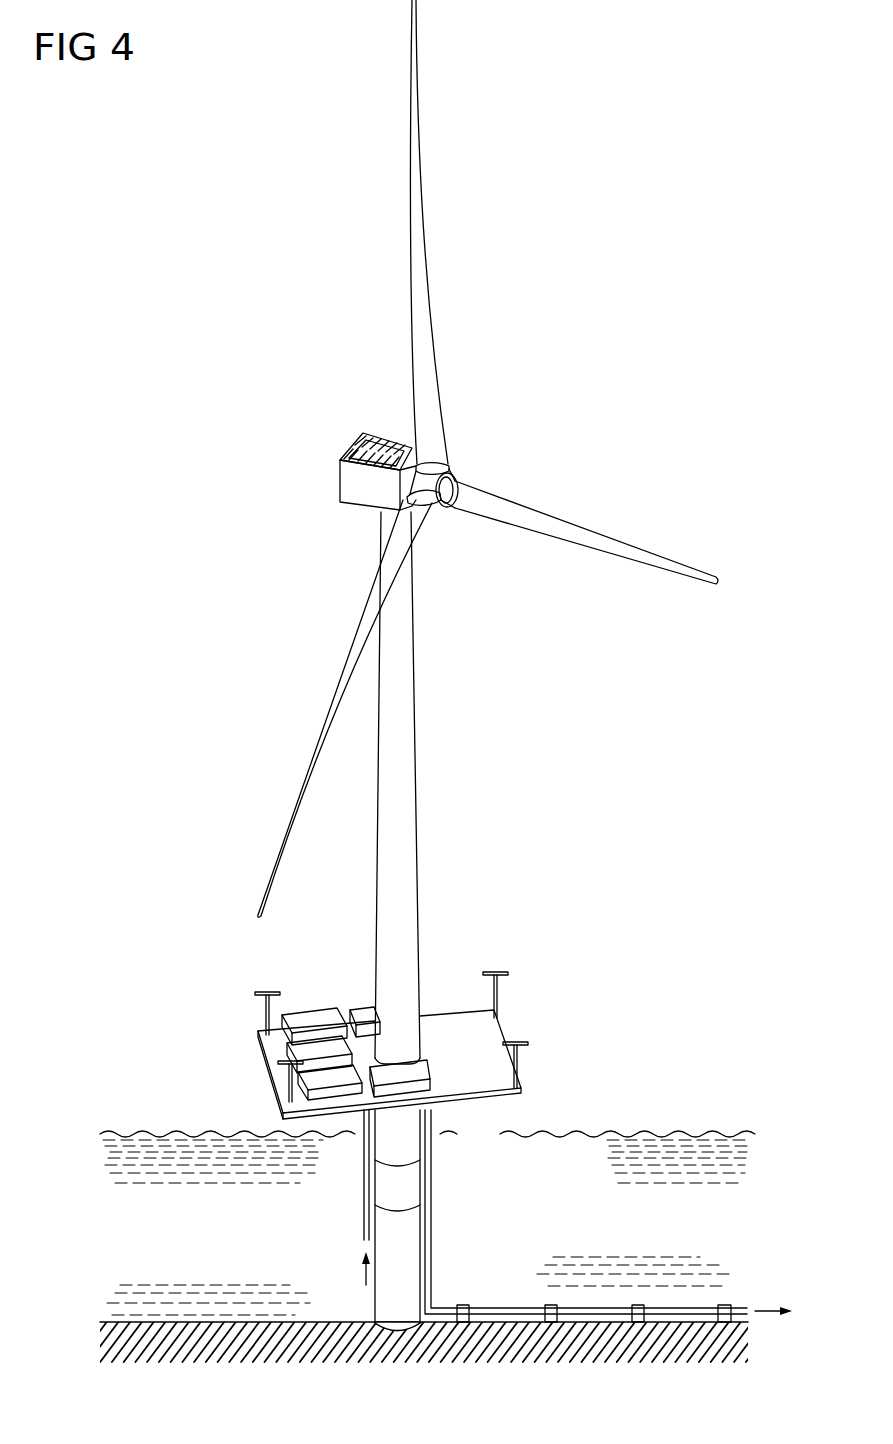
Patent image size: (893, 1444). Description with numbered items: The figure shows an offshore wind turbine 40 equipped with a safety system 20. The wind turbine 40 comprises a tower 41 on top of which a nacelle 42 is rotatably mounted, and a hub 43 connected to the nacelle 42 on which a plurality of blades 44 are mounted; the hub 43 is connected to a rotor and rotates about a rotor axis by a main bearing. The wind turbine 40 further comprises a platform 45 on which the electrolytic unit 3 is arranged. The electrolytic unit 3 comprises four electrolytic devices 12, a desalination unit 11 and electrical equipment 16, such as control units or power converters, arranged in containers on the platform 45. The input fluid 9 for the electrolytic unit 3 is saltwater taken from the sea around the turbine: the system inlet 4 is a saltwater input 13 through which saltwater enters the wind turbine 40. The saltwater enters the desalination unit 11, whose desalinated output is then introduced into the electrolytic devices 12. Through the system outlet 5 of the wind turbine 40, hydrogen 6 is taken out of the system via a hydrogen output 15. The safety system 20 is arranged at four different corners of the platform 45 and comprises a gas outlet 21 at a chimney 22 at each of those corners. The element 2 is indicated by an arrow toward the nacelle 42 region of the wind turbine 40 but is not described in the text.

The wind turbine generator unit 2 is at (344, 428).
The electrolytic unit 3 is at (608, 1015).
The system inlet 4 is at (314, 1197).
The system outlet 5 is at (608, 1216).
The hydrogen 6 is at (608, 1216).
The input fluid 9 is at (187, 1249).
The desalination unit 11 is at (424, 1085).
The electrolytic device 12 is at (327, 1035).
The saltwater input 13 is at (362, 1214).
The hydrogen output 15 is at (433, 1190).
The electrical equipment 16 is at (362, 1010).
The safety system 20 is at (454, 979).
The gas outlet 21 is at (395, 1029).
The chimney 22 is at (263, 995).
The wind turbine 40 is at (620, 357).
The tower 41 is at (406, 810).
The nacelle 42 is at (346, 488).
The hub 43 is at (448, 493).
The blade 44 is at (412, 198).
The platform 45 is at (500, 1025).